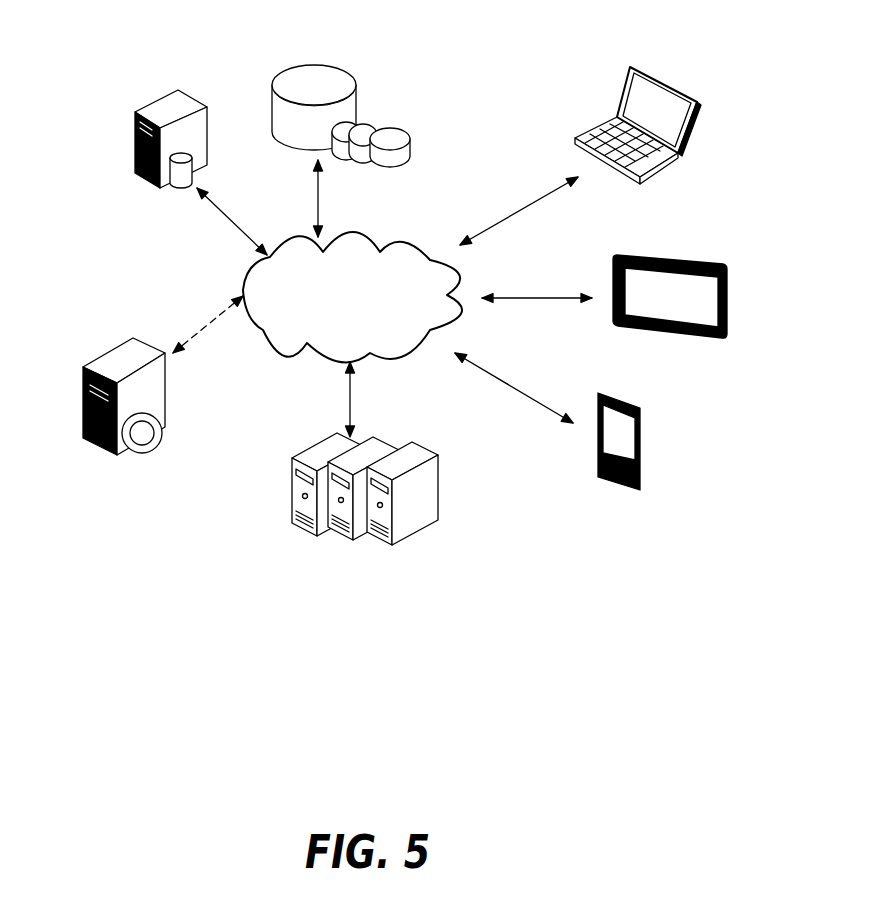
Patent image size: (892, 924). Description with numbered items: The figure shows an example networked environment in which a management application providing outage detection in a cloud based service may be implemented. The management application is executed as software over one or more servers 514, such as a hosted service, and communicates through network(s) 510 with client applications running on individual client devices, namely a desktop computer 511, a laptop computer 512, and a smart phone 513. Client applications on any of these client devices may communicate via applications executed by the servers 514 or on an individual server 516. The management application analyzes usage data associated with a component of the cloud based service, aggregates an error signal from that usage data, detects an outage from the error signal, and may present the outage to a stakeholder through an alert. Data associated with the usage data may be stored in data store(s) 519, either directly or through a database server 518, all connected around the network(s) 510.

The network(s) 510 is at (353, 225).
The desktop computer 511 is at (668, 67).
The laptop computer 512 is at (702, 242).
The smart phone 513 is at (647, 410).
The servers 514 is at (318, 438).
The individual server 516 is at (102, 347).
The database server 518 is at (170, 197).
The data store(s) 519 is at (327, 47).